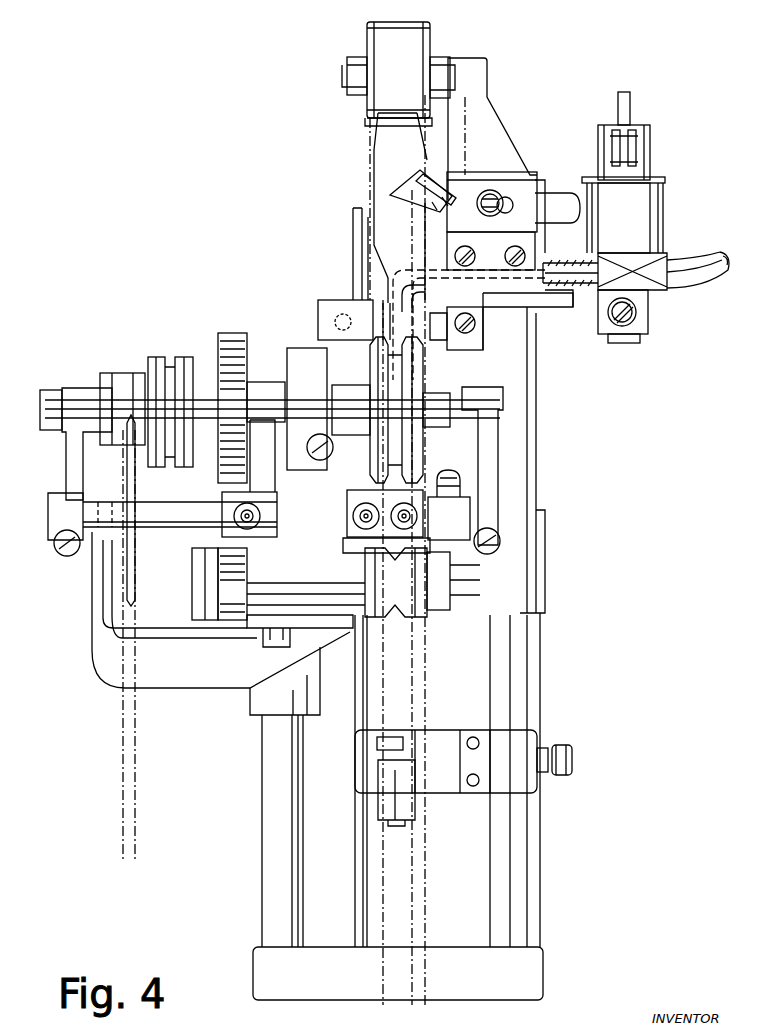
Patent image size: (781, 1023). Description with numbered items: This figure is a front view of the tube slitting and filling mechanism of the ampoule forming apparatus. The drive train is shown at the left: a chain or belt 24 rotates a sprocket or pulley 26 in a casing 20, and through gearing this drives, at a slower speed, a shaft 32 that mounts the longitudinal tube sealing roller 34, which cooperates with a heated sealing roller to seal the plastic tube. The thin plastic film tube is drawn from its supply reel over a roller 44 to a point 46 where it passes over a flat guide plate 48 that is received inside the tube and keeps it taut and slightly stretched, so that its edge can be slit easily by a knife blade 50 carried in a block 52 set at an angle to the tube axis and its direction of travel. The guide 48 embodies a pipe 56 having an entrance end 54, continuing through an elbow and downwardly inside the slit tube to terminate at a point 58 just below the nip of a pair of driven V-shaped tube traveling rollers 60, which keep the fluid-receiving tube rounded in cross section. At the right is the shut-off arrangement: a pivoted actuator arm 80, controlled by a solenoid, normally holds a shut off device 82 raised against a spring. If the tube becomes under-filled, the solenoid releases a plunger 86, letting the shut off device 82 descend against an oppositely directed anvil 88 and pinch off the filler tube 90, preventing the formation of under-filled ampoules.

The casing 20 is at (510, 147).
The chain or belt 24 is at (133, 773).
The sprocket or pulley 26 is at (127, 590).
The shaft 32 is at (297, 405).
The longitudinal tube sealing roller 34 is at (398, 377).
The roller 44 is at (428, 43).
The point 46 is at (370, 134).
The guide plate 48 is at (382, 166).
The knife blade 50 is at (434, 178).
The block 52 is at (518, 197).
The entrance end 54 is at (556, 272).
The pipe 56 is at (402, 270).
The point 58 is at (408, 615).
The tube traveling rollers 60 is at (370, 580).
The actuator arm 80 is at (630, 104).
The shut off device 82 is at (632, 253).
The plunger 86 is at (630, 170).
The anvil 88 is at (635, 342).
The filler tube 90 is at (678, 290).